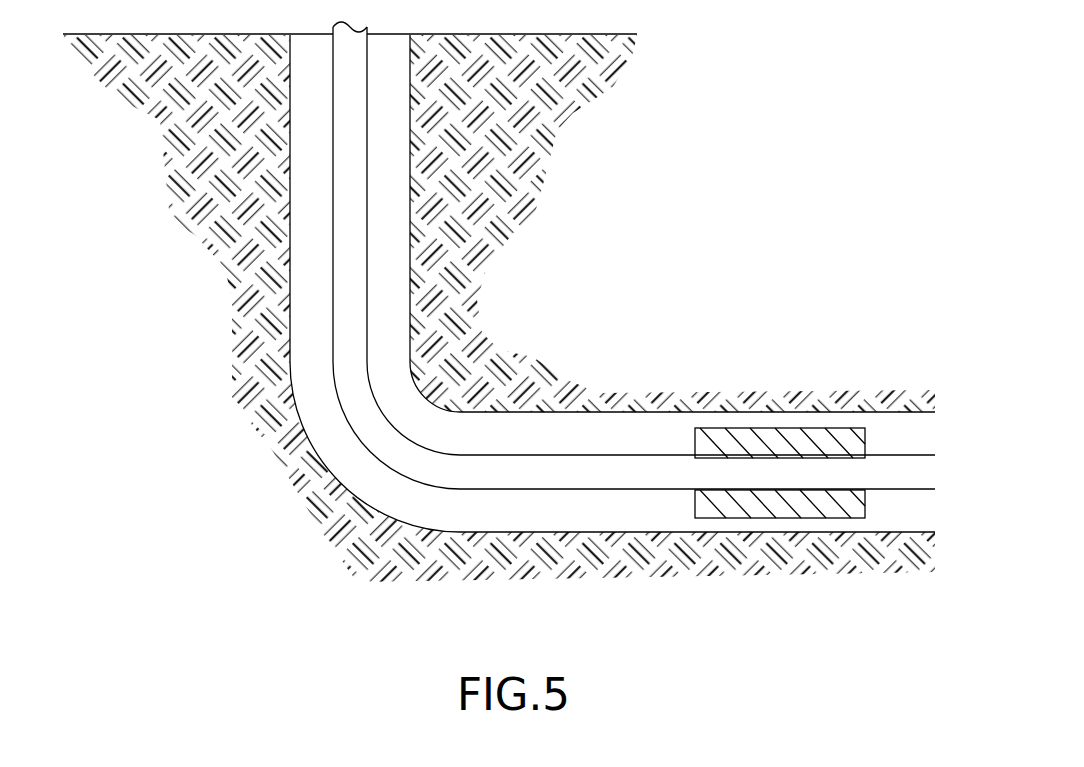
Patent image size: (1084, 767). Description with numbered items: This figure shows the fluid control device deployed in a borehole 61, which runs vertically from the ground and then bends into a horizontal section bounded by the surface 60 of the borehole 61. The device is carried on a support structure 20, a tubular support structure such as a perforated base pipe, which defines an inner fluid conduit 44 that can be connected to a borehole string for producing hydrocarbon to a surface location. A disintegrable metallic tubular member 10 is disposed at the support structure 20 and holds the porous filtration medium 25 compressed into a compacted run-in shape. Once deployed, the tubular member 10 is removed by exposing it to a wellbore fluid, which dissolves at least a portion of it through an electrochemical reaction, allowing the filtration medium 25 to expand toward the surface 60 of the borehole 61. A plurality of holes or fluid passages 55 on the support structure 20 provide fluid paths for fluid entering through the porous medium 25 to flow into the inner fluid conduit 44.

The disintegrable metallic tubular member 10 is at (778, 458).
The support structure 20 is at (612, 455).
The filtration medium 25 is at (767, 447).
The inner fluid conduit 44 is at (395, 452).
The fluid passages 55 is at (720, 490).
The surface of the borehole 60 is at (573, 535).
The borehole 61 is at (320, 302).